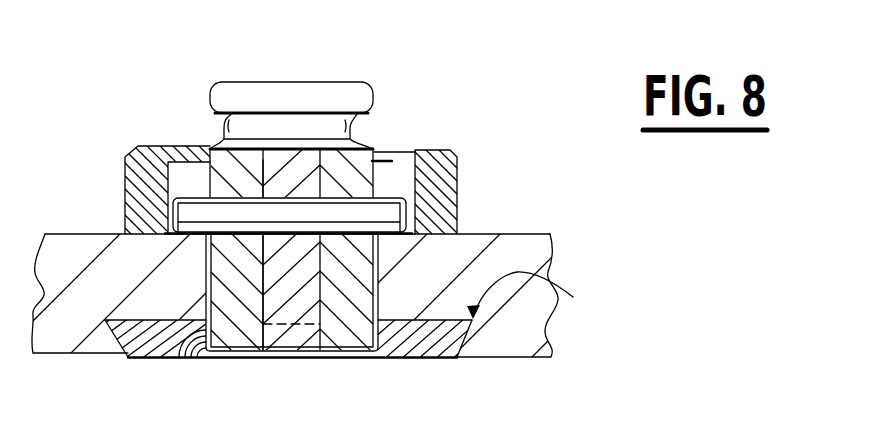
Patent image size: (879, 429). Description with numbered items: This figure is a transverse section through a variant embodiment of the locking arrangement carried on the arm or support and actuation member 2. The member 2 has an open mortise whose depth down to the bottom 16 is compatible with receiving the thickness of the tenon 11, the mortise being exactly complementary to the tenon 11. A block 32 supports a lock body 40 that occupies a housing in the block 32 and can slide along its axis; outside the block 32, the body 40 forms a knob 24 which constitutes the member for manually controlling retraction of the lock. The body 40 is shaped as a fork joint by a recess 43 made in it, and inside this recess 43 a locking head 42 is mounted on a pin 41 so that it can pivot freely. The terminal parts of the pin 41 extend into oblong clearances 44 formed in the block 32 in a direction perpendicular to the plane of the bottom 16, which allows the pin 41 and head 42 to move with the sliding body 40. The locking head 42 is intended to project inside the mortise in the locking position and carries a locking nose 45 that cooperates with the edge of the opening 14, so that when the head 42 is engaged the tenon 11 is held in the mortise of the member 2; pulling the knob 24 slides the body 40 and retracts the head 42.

The support and actuation member 2 is at (543, 234).
The tenon 11 is at (432, 346).
The opening 14 is at (178, 360).
The bottom of the mortise 16 is at (537, 297).
The knob 24 is at (353, 88).
The block 32 is at (445, 197).
The lock body 40 is at (352, 332).
The pin 41 is at (400, 178).
The locking head 42 is at (298, 167).
The recess 43 is at (212, 93).
The oblong clearances 44 is at (392, 168).
The locking nose 45 is at (297, 330).